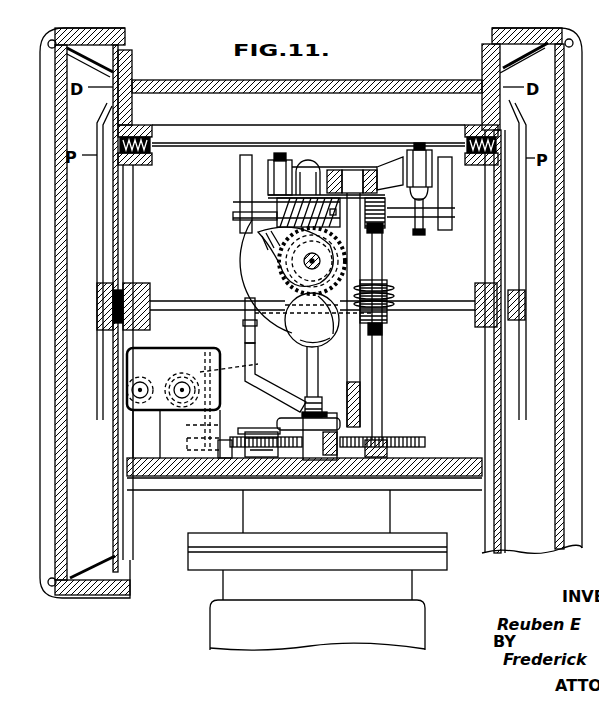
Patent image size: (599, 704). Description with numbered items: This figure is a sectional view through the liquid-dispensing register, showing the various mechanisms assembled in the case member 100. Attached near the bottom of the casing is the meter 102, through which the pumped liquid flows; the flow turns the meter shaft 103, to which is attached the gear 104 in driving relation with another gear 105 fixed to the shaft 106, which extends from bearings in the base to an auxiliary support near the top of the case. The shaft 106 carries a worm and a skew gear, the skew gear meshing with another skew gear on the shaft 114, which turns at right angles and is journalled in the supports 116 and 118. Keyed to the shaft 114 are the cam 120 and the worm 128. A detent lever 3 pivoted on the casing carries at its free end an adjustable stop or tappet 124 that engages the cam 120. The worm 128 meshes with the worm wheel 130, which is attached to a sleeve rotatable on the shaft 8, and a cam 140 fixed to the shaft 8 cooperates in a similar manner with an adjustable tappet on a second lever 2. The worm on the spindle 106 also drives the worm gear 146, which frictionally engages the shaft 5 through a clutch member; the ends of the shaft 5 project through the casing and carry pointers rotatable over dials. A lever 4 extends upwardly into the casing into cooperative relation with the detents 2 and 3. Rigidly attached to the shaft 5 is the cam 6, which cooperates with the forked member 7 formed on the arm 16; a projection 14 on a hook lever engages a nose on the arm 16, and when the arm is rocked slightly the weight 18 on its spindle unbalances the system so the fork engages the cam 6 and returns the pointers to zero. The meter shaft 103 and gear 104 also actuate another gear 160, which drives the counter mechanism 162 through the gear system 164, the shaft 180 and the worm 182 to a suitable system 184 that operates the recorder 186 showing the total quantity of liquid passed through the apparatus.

The case member 100 is at (402, 81).
The meter 102 is at (222, 638).
The shaft 103 is at (330, 462).
The gear 104 is at (292, 462).
The gear 105 is at (426, 441).
The shaft 106 is at (383, 396).
The shaft 114 is at (399, 220).
The support 116 is at (240, 180).
The support 118 is at (444, 158).
The cam 120 is at (420, 228).
The adjustable stop or tappet 124 is at (282, 160).
The worm 128 is at (310, 205).
The worm wheel 130 is at (308, 263).
The cam 140 is at (287, 237).
The worm gear 146 is at (394, 281).
The gear 160 is at (245, 437).
The counter mechanism 162 is at (150, 348).
The gear system 164 is at (225, 445).
The shaft 180 is at (204, 430).
The worm 182 is at (257, 374).
The system 184 is at (153, 417).
The recorder 186 is at (142, 371).
The projection 14 is at (407, 265).
The arm 16 is at (263, 394).
The weight 18 is at (297, 331).
The lever 2 is at (386, 160).
The detent lever 3 is at (330, 172).
The lever 4 is at (347, 372).
The shaft 5 is at (450, 308).
The cam 6 is at (243, 323).
The forked member 7 is at (245, 337).
The shaft 8 is at (290, 266).